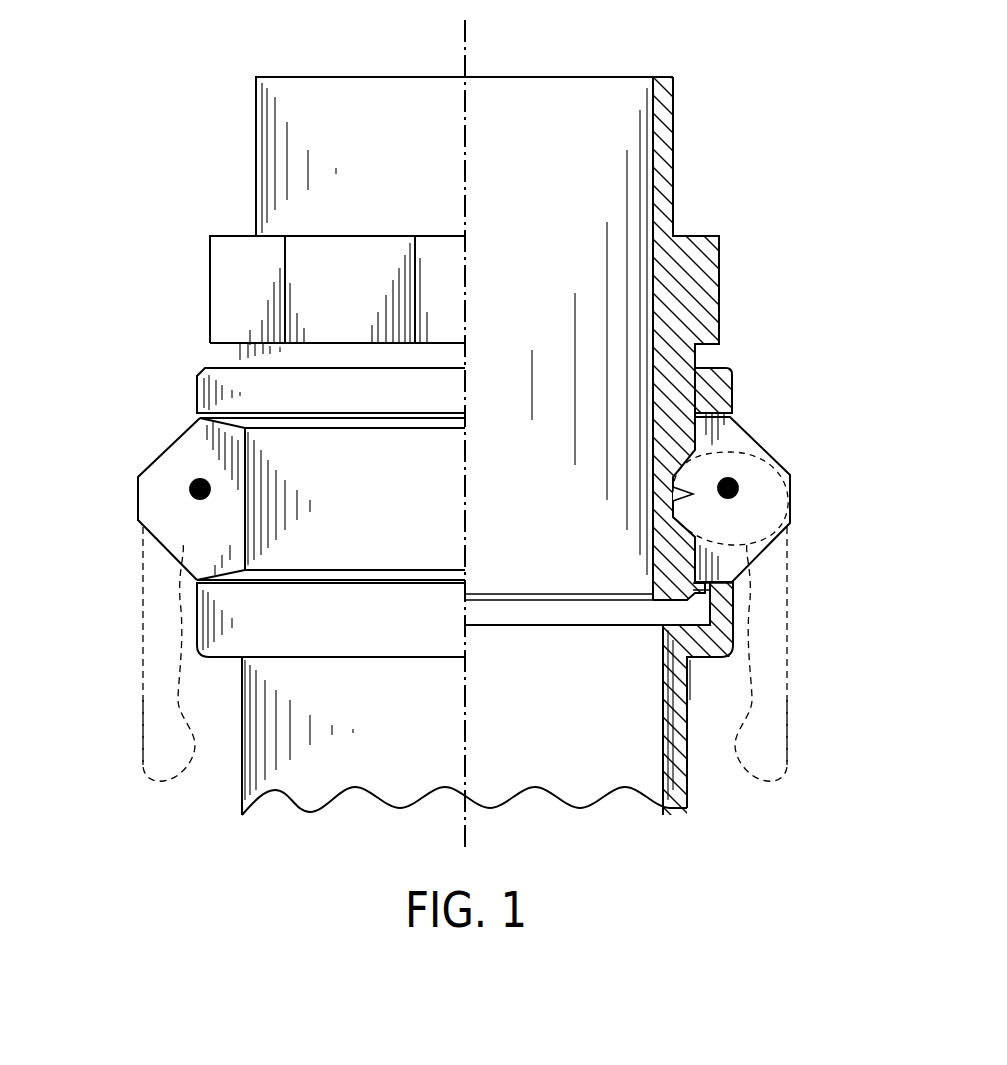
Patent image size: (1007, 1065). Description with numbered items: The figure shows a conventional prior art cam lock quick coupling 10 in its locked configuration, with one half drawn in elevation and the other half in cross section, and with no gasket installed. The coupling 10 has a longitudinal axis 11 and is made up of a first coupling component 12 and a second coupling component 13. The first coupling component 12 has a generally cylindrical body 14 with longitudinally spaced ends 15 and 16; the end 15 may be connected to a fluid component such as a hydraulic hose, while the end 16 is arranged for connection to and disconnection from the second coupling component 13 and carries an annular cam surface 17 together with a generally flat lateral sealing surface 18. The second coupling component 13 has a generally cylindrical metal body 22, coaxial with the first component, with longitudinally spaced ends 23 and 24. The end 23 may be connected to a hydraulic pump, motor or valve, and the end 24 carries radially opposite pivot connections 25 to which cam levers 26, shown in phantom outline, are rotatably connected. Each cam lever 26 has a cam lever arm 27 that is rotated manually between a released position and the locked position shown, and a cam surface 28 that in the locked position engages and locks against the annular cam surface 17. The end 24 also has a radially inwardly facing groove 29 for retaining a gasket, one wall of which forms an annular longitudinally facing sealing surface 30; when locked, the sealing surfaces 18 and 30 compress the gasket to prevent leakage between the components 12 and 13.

The cam lock quick coupling 10 is at (140, 308).
The longitudinal axis 11 is at (466, 32).
The first coupling component 12 is at (367, 297).
The second coupling component 13 is at (406, 719).
The generally cylindrical body 14 is at (715, 300).
The end 15 is at (668, 163).
The end 16 is at (660, 563).
The annular cam surface 17 is at (692, 494).
The lateral sealing surface 18 is at (689, 601).
The generally cylindrical metal body 22 is at (672, 712).
The end 23 is at (682, 772).
The end 24 is at (727, 390).
The pivot connections 25 is at (740, 485).
The cam levers 26 is at (788, 548).
The cam lever arm 27 is at (775, 666).
The cam surface 28 is at (660, 458).
The radially inwardly facing groove 29 is at (713, 593).
The longitudinally facing sealing surface 30 is at (662, 627).